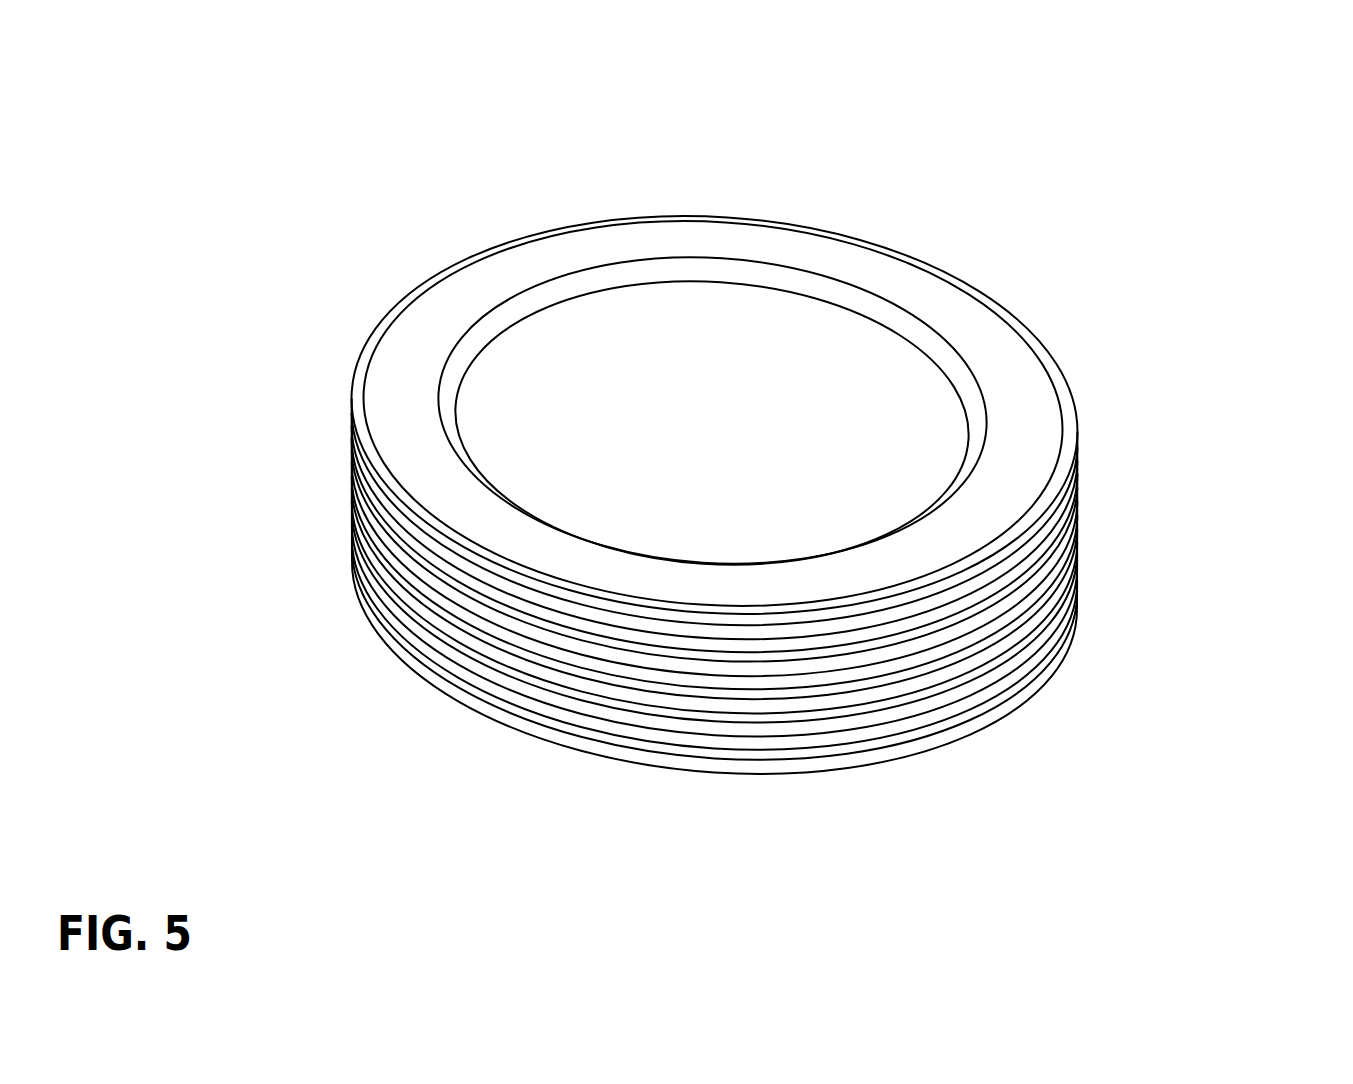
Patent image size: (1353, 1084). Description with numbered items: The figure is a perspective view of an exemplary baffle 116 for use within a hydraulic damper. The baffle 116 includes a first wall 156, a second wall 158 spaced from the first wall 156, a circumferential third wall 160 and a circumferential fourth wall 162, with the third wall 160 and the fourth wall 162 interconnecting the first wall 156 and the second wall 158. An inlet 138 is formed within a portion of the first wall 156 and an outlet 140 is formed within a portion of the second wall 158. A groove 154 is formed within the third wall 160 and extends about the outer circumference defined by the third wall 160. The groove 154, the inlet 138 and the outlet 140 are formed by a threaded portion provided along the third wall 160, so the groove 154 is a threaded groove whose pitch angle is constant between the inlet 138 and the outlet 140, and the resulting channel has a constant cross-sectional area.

The baffle 116 is at (1213, 76).
The inlet 138 is at (1047, 510).
The outlet 140 is at (388, 643).
The groove 154 is at (513, 672).
The first wall 156 is at (1023, 333).
The second wall 158 is at (605, 757).
The third wall 160 is at (350, 481).
The fourth wall 162 is at (487, 342).